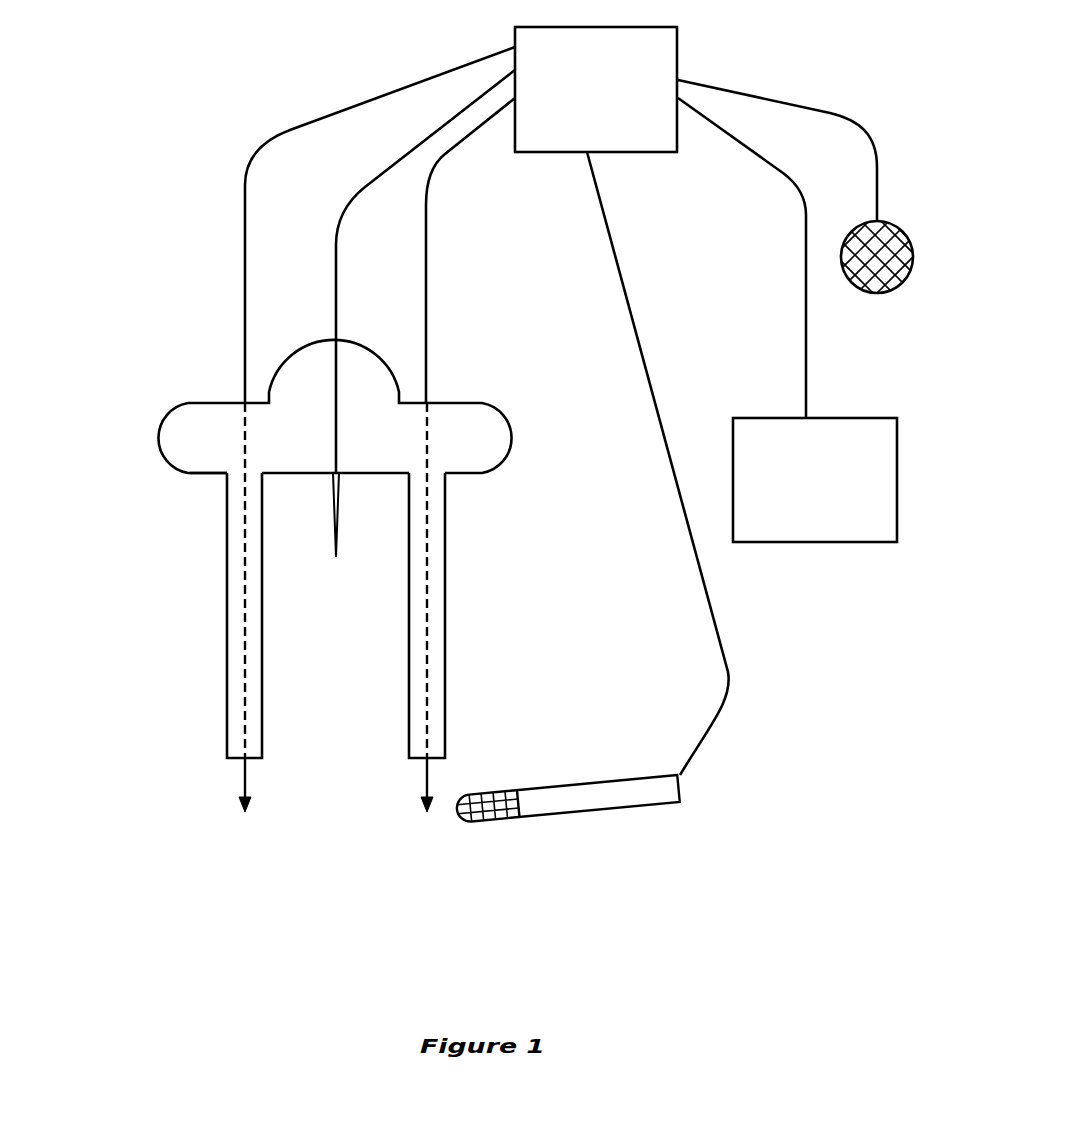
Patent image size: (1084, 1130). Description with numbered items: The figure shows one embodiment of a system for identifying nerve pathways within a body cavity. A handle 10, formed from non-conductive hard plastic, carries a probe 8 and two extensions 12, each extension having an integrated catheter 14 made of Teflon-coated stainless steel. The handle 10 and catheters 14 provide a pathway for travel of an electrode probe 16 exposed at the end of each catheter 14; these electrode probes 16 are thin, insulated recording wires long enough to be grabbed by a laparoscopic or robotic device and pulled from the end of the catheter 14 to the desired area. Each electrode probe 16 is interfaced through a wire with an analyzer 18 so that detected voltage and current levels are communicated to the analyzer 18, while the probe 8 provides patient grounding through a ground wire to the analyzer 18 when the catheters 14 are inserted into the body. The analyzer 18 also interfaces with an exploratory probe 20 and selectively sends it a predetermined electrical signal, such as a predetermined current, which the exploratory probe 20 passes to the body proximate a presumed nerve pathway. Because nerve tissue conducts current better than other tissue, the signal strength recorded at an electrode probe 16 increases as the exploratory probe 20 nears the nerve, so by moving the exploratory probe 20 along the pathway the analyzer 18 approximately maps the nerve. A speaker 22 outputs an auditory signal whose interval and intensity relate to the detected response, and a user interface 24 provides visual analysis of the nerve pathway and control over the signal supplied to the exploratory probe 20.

The probe 8 is at (336, 557).
The handle 10 is at (180, 401).
The extension 12 is at (227, 474).
The catheter 14 is at (227, 620).
The electrode probe 16 is at (428, 815).
The analyzer 18 is at (607, 116).
The exploratory probe 20 is at (643, 807).
The speaker 22 is at (895, 290).
The user interface 24 is at (826, 506).